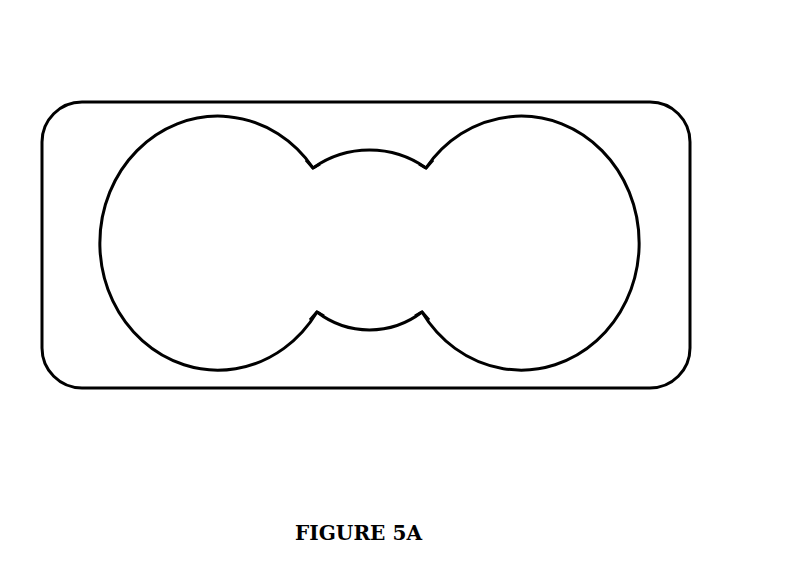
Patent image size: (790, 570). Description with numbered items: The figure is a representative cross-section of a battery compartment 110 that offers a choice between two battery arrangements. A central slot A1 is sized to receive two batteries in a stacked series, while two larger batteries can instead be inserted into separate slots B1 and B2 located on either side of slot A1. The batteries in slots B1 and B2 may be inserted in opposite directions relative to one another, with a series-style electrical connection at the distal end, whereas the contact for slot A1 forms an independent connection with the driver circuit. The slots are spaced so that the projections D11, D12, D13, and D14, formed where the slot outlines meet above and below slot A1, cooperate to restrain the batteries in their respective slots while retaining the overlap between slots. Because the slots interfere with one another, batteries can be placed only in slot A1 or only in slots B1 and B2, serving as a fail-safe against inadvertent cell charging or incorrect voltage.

The compartment 110 is at (632, 358).
The slot B1 is at (194, 238).
The slot B2 is at (535, 238).
The slot A1 is at (390, 238).
The projection D11 is at (315, 148).
The projection D12 is at (317, 338).
The projection D13 is at (428, 148).
The projection D14 is at (417, 330).